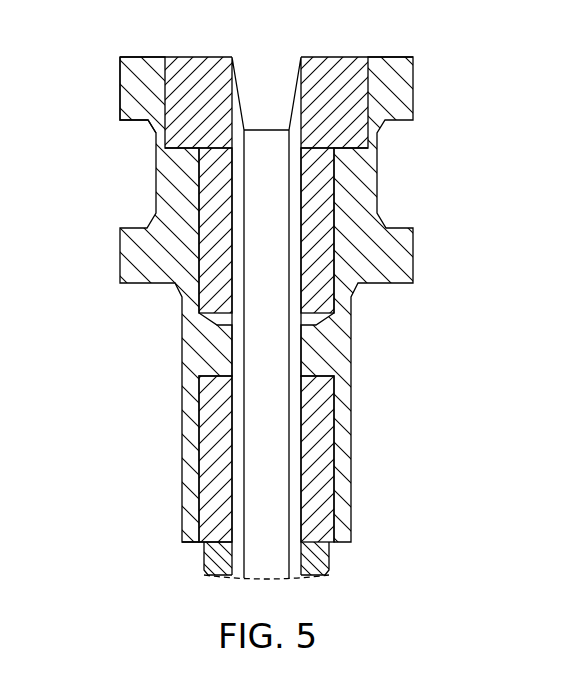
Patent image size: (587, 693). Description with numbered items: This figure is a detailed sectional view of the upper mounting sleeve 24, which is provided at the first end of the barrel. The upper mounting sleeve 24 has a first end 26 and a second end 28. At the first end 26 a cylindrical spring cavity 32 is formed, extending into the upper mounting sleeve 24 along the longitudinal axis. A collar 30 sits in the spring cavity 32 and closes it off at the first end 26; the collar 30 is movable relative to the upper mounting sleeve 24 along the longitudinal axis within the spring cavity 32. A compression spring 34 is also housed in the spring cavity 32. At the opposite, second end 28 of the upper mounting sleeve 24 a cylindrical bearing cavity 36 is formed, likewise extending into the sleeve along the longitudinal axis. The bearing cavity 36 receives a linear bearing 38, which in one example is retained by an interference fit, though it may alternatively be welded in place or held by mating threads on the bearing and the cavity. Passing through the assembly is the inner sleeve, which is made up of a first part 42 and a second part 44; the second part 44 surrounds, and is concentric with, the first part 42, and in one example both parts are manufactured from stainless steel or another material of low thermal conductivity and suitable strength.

The upper mounting sleeve 24 is at (383, 80).
The first end 26 is at (104, 87).
The second end 28 is at (172, 540).
The collar 30 is at (160, 50).
The spring cavity 32 is at (330, 178).
The compression spring 34 is at (183, 183).
The bearing cavity 36 is at (328, 497).
The linear bearing 38 is at (315, 385).
The first part 42 is at (287, 569).
The second part 44 is at (275, 539).